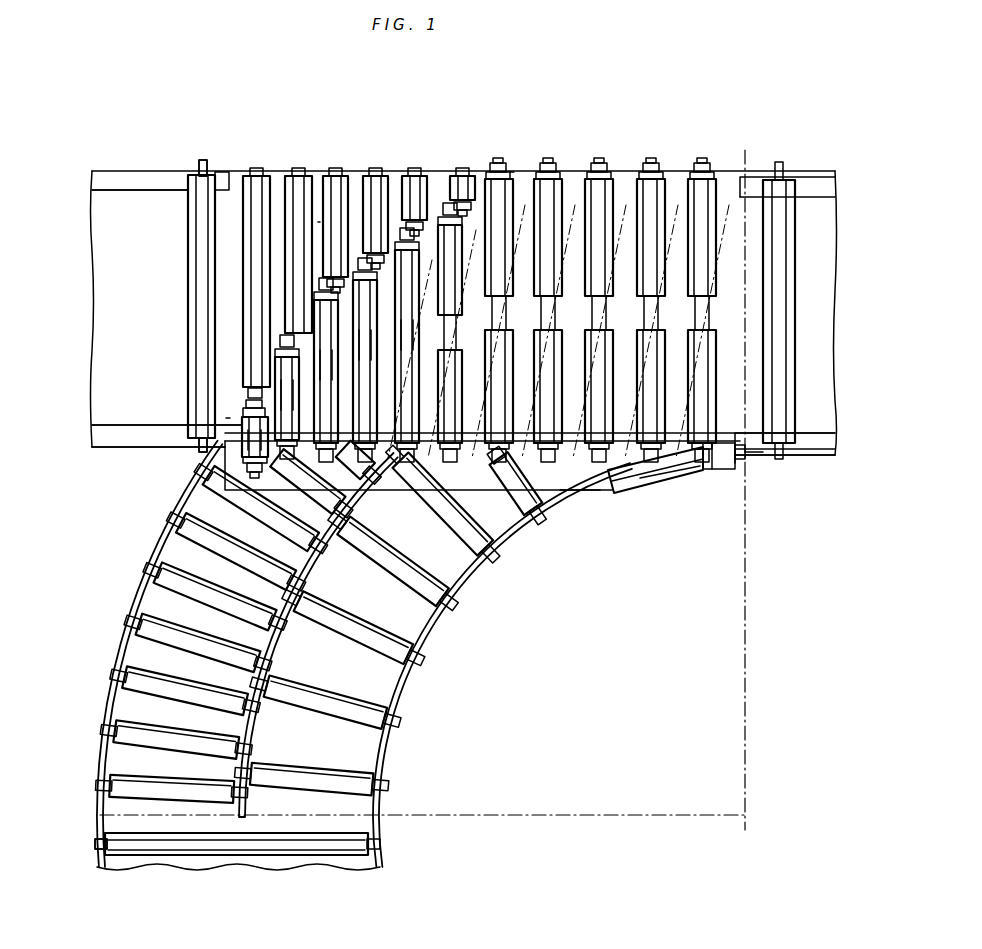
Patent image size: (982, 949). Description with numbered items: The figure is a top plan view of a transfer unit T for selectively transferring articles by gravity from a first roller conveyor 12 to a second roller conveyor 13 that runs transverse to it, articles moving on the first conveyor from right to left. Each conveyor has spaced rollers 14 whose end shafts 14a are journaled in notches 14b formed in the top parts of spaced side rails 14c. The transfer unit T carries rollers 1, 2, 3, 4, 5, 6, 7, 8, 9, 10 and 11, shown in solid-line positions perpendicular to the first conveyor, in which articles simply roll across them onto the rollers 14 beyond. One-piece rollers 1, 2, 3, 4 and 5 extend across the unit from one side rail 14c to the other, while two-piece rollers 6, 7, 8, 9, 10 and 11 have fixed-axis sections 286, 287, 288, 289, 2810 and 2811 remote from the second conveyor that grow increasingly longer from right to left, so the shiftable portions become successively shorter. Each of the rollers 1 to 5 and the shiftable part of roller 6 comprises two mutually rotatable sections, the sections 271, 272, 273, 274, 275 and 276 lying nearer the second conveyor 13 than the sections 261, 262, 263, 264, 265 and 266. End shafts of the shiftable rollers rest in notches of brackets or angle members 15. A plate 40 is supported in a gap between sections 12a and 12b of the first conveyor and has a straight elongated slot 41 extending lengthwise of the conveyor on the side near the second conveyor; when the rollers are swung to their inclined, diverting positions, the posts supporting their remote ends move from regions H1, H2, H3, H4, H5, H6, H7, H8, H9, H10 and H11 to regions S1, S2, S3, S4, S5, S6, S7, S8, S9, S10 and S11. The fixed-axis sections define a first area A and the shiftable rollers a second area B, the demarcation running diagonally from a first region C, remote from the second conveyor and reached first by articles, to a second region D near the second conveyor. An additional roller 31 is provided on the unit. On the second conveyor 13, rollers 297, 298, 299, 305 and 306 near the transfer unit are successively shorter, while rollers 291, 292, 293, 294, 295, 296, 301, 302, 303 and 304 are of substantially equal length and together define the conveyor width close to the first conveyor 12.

The first roller conveyor 12 is at (112, 333).
The first roller conveyor section 12a is at (827, 462).
The first roller conveyor section 12b is at (152, 448).
The second roller conveyor 13 is at (381, 829).
The roller 14 is at (190, 296).
The end shaft 14a is at (223, 168).
The notch 14b is at (205, 166).
The side rail 14c is at (110, 170).
The bracket 15 is at (700, 479).
The plate 40 is at (730, 178).
The elongated slot 41 is at (740, 470).
The additional roller 31 is at (645, 497).
The one-piece roller 1 is at (708, 299).
The one-piece roller 2 is at (657, 298).
The one-piece roller 3 is at (606, 298).
The one-piece roller 4 is at (554, 298).
The one-piece roller 5 is at (504, 310).
The two-piece roller 6 is at (459, 339).
The two-piece roller 7 is at (413, 345).
The two-piece roller 8 is at (373, 360).
The two-piece roller 9 is at (334, 370).
The two-piece roller 10 is at (271, 397).
The two-piece roller 11 is at (219, 439).
The roller section 261 is at (704, 280).
The roller section 262 is at (652, 285).
The roller section 263 is at (600, 280).
The roller section 264 is at (549, 280).
The roller section 265 is at (498, 275).
The roller section 266 is at (452, 282).
The roller section 271 is at (704, 380).
The roller section 272 is at (652, 380).
The roller section 273 is at (600, 388).
The roller section 274 is at (548, 380).
The roller section 275 is at (498, 372).
The roller section 276 is at (470, 447).
The fixed-axis roller section 286 is at (460, 188).
The fixed-axis roller section 287 is at (412, 185).
The fixed-axis roller section 288 is at (374, 186).
The fixed-axis roller section 289 is at (332, 185).
The fixed-axis roller section 2810 is at (294, 188).
The fixed-axis roller section 2811 is at (252, 190).
The support region H1 is at (698, 182).
The support region H2 is at (648, 184).
The support region H3 is at (598, 200).
The support region H4 is at (547, 205).
The support region H5 is at (498, 224).
The support region H6 is at (455, 238).
The support region H7 is at (407, 270).
The support region H8 is at (365, 282).
The support region H9 is at (326, 304).
The support region H10 is at (285, 358).
The support region H11 is at (246, 402).
The shifted support region S1 is at (703, 212).
The shifted support region S2 is at (651, 214).
The shifted support region S3 is at (601, 224).
The shifted support region S4 is at (547, 230).
The shifted support region S5 is at (500, 244).
The shifted support region S6 is at (455, 256).
The shifted support region S7 is at (406, 292).
The shifted support region S8 is at (363, 320).
The shifted support region S9 is at (323, 346).
The shifted support region S10 is at (290, 389).
The shifted support region S11 is at (234, 428).
The second conveyor roller 291 is at (110, 774).
The second conveyor roller 292 is at (115, 737).
The second conveyor roller 293 is at (125, 676).
The second conveyor roller 294 is at (140, 623).
The second conveyor roller 295 is at (160, 573).
The second conveyor roller 296 is at (185, 529).
The second conveyor roller 297 is at (215, 493).
The second conveyor roller 298 is at (313, 485).
The second conveyor roller 299 is at (362, 492).
The second conveyor roller 301 is at (363, 792).
The second conveyor roller 302 is at (375, 732).
The second conveyor roller 303 is at (398, 666).
The second conveyor roller 304 is at (422, 593).
The second conveyor roller 305 is at (472, 546).
The second conveyor roller 306 is at (522, 506).
The first area A is at (318, 222).
The second area B is at (580, 513).
The first region C is at (511, 172).
The second region D is at (228, 418).
The transfer unit T is at (676, 487).